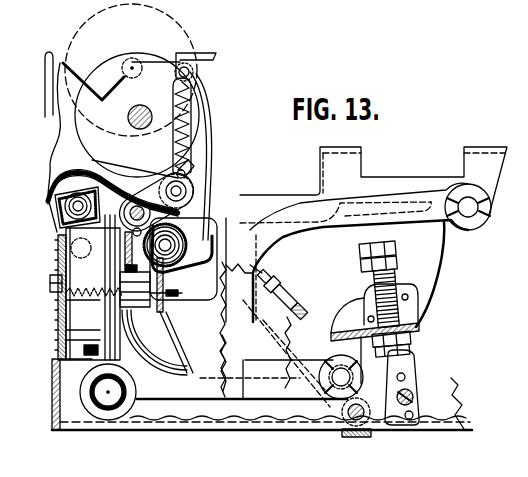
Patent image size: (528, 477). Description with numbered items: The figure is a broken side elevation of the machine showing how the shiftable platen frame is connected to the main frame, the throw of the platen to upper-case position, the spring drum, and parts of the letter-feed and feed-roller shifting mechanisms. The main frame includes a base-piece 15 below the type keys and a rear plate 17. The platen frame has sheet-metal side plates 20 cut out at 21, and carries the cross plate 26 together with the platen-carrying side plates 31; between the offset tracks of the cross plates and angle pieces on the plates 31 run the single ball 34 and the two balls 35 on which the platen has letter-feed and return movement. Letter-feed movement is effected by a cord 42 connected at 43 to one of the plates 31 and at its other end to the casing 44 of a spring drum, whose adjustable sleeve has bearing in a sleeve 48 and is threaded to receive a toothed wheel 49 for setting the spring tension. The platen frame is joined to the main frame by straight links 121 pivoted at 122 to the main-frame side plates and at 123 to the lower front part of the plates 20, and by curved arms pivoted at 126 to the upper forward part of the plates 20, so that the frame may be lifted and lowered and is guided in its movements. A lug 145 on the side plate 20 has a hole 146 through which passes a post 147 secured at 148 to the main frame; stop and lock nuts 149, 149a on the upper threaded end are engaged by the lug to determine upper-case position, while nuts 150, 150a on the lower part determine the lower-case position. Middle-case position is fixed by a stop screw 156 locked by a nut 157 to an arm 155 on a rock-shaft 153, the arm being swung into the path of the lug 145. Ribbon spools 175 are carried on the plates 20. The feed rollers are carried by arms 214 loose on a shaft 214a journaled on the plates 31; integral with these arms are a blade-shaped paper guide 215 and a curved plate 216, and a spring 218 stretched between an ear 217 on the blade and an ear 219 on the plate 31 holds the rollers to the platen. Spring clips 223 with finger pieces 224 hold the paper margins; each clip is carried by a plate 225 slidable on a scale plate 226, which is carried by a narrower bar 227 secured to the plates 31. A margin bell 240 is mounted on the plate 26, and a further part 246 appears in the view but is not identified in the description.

The side plates 31 is at (60, 137).
The cord connection point 43 is at (90, 172).
The finger piece 224 is at (203, 54).
The ear 219 is at (194, 72).
The spring 218 is at (192, 118).
The blade-shaped part 215 is at (207, 150).
The spring clips 223 is at (211, 160).
The ear 217 is at (195, 173).
The arms 214 is at (146, 198).
The shaft 214a is at (107, 186).
The plate 216 is at (193, 193).
The ball 34 is at (66, 209).
The toothed wheel 49 is at (58, 262).
The casing 44 is at (82, 345).
The sleeve 48 is at (70, 286).
The bar 227 is at (206, 250).
The carrier plate 225 is at (205, 230).
The scale plate 226 is at (223, 243).
The balls 35 is at (190, 266).
The pin 246 is at (182, 294).
The cross plate 26 is at (191, 324).
The margin alarm or bell 240 is at (154, 342).
The rear plate 17 is at (54, 396).
The base-piece 15 is at (110, 424).
The cord 42 is at (126, 372).
The pivot 122 is at (105, 396).
The arms or links 121 is at (270, 402).
The cut-out 21 is at (410, 228).
The pivot 126 is at (479, 208).
The spools 175 is at (320, 149).
The side plates 20 is at (436, 262).
The arm or post 155 is at (295, 292).
The stop screw 156 is at (283, 282).
The nut 157 is at (300, 307).
The lock nut 149a is at (364, 252).
The stop nut 149 is at (366, 266).
The post 147 is at (400, 290).
The lock nut 150a is at (342, 315).
The lug or offset 145 is at (422, 324).
The hole 146 is at (410, 341).
The post attachment 148 is at (418, 382).
The stop nut 150 is at (362, 346).
The pivot 123 is at (361, 402).
The rock-shaft 153 is at (352, 437).